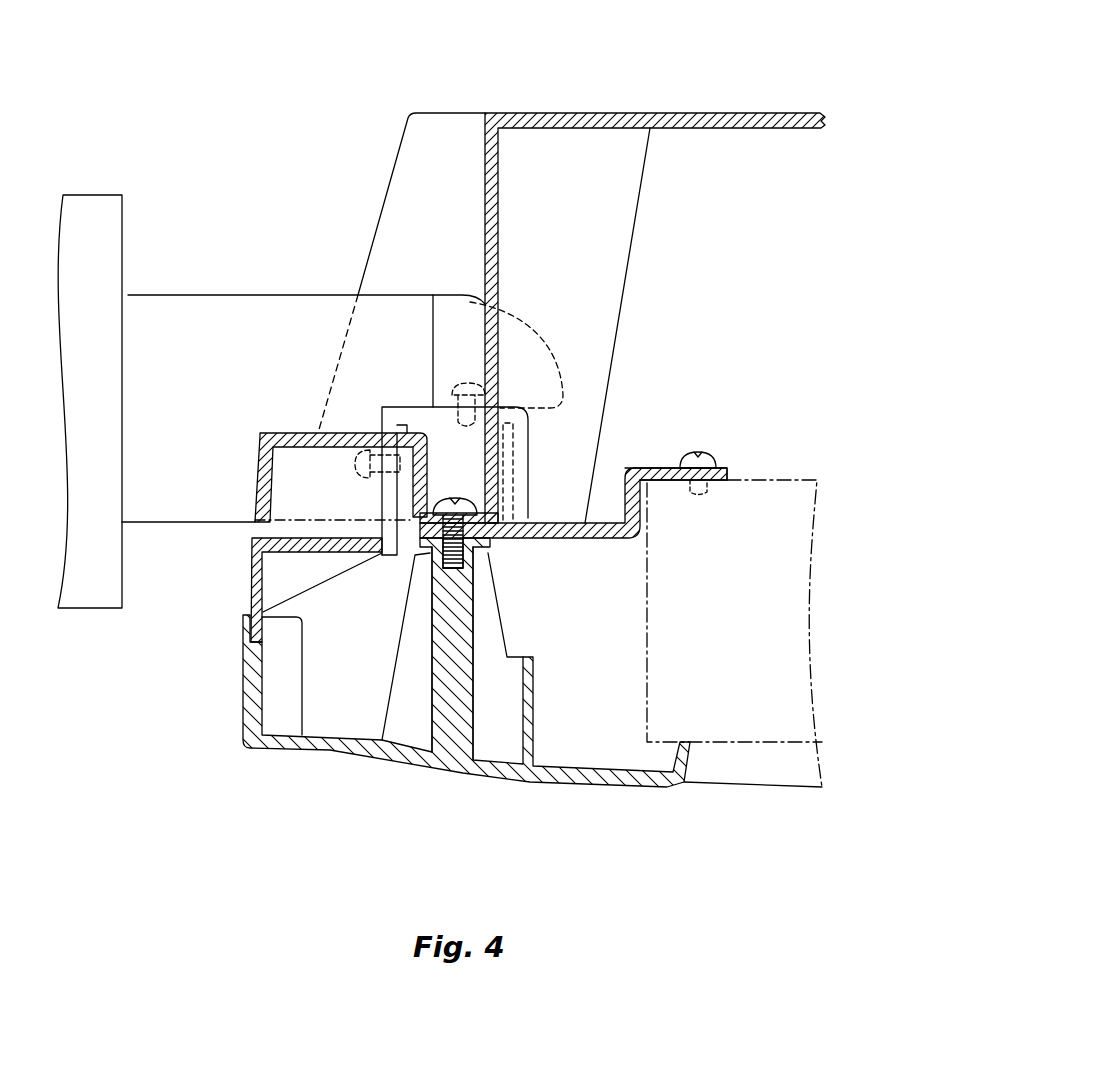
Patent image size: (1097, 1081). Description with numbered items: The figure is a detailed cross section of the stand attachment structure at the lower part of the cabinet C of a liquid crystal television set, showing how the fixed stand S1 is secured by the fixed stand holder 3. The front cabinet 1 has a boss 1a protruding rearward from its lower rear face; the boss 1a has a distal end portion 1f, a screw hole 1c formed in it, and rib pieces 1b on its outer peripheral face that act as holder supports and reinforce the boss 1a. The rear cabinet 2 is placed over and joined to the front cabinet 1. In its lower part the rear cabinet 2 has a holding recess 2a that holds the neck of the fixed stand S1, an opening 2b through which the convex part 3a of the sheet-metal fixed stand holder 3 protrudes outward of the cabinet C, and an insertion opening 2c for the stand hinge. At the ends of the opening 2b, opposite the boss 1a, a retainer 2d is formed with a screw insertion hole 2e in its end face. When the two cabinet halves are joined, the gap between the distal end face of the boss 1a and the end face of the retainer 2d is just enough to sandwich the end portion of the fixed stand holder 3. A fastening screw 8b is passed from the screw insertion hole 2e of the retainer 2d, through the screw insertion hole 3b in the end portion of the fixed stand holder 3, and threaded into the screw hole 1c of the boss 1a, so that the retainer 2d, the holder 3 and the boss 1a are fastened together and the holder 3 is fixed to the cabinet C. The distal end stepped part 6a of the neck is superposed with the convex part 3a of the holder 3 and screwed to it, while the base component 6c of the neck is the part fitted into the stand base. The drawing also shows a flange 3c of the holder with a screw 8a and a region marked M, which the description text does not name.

The front cabinet 1 is at (620, 787).
The bosses 1a is at (445, 672).
The rib pieces 1b is at (410, 637).
The screw holes 1c is at (497, 565).
The distal end portions 1f is at (415, 553).
The rear cabinet 2 is at (570, 113).
The holding recess 2a is at (462, 148).
The opening 2b is at (395, 527).
The insertion opening 2c is at (257, 533).
The retainers 2d is at (475, 540).
The screw insertion hole 2e is at (483, 518).
The fixed stand holder 3 is at (590, 540).
The convex part 3a is at (527, 453).
The screw insertion holes 3b is at (432, 540).
The bracket flange 3c is at (650, 468).
The distal end stepped part 6a is at (545, 418).
The base component 6c is at (101, 195).
The screw 8a is at (710, 455).
The fastening screws 8b is at (447, 493).
The fixed stand S1 is at (218, 295).
The motor M is at (772, 480).
The cabinet C is at (720, 85).